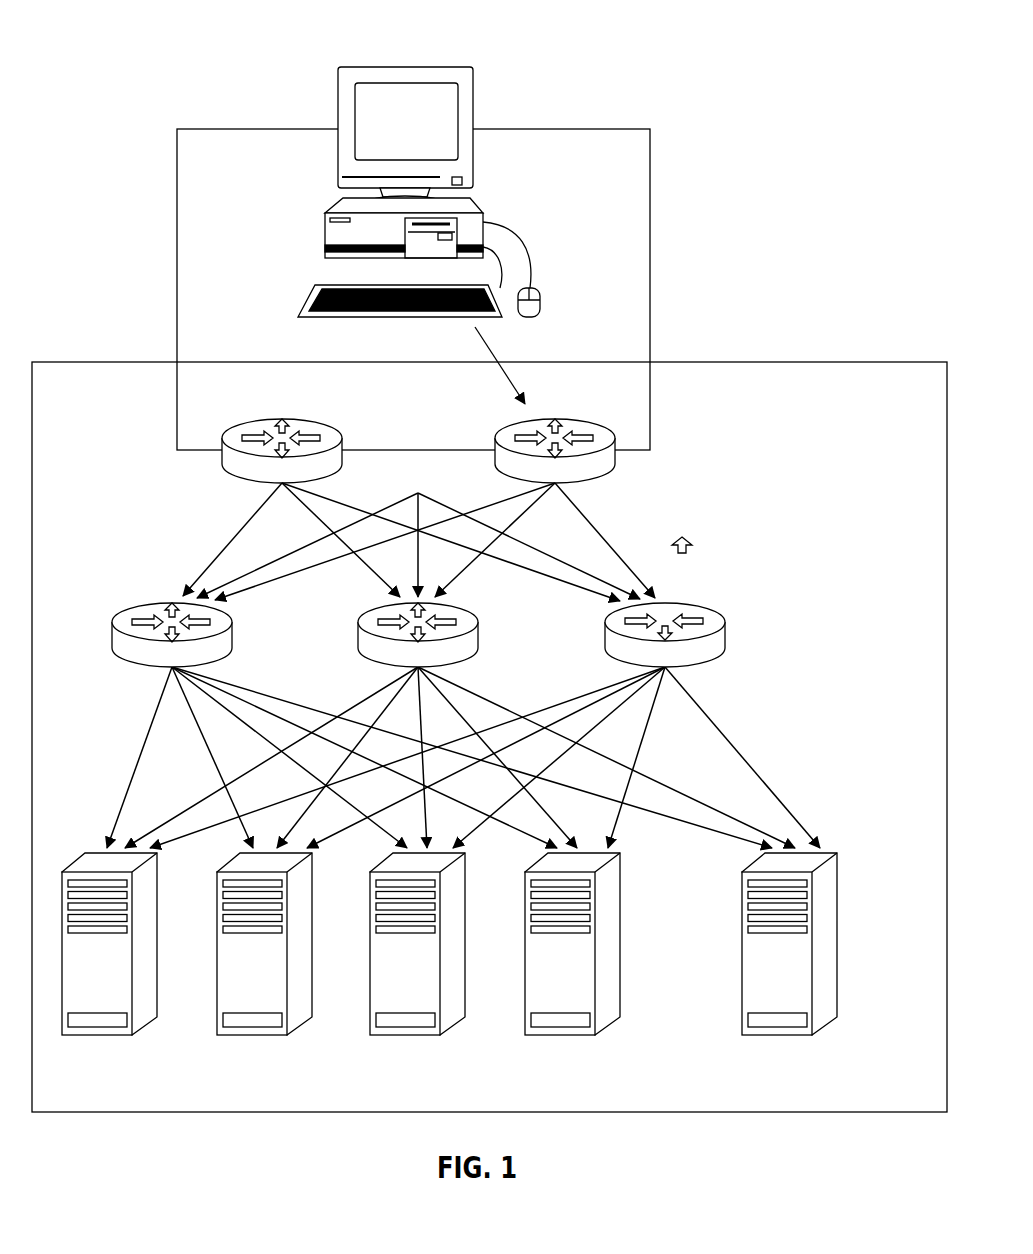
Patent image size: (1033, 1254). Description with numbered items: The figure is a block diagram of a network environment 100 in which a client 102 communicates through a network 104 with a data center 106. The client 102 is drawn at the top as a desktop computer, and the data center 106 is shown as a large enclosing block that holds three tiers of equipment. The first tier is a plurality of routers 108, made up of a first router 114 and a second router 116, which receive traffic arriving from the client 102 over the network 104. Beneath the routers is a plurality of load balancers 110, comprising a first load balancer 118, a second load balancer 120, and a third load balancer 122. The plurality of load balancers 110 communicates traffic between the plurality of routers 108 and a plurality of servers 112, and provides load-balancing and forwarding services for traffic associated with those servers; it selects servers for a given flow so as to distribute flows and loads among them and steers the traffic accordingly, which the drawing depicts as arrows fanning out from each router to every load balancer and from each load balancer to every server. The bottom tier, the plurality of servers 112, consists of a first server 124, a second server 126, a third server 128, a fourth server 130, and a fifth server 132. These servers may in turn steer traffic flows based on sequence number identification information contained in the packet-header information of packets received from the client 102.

The network environment 100 is at (176, 40).
The client 102 is at (338, 95).
The network 104 is at (177, 192).
The data center 106 is at (752, 362).
The plurality of routers 108 is at (141, 403).
The plurality of load balancers 110 is at (725, 523).
The plurality of servers 112 is at (799, 768).
The first router 114 is at (262, 418).
The second router 116 is at (550, 418).
The first load balancer 118 is at (152, 602).
The second load balancer 120 is at (357, 633).
The third load balancer 122 is at (605, 633).
The first server 124 is at (97, 1035).
The second server 126 is at (252, 1035).
The third server 128 is at (406, 1035).
The fourth server 130 is at (561, 1035).
The fifth server 132 is at (777, 1035).